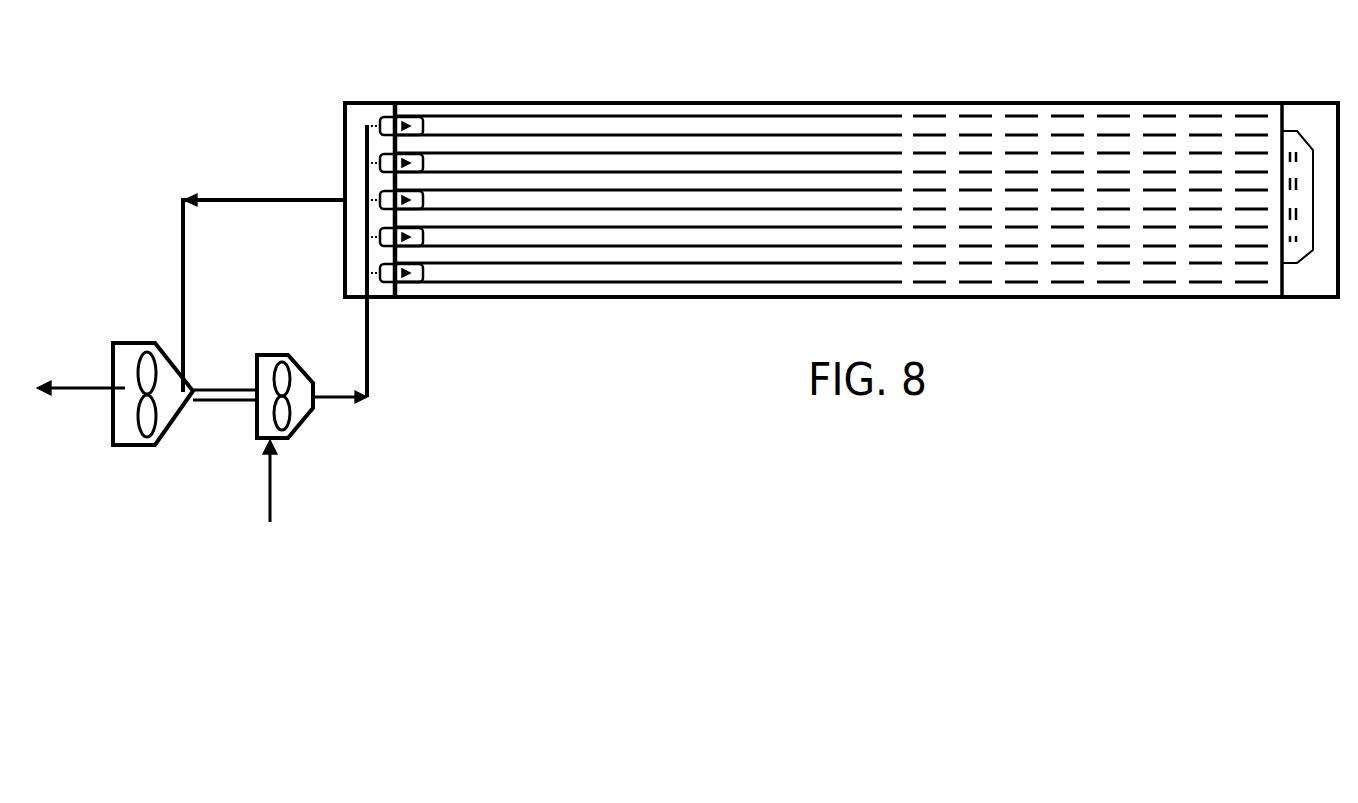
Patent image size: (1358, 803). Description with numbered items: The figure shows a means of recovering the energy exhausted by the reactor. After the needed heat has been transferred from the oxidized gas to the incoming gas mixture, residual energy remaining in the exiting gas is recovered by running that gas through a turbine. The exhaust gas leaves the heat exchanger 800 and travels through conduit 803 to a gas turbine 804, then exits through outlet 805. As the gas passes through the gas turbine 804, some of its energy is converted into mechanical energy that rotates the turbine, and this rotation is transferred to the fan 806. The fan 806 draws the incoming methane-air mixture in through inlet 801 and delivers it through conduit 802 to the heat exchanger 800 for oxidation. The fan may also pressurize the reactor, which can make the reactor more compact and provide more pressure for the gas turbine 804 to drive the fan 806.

The heat exchanger 800 is at (790, 88).
The inlet 801 is at (273, 493).
The conduit 802 is at (368, 350).
The conduit 803 is at (297, 195).
The gas turbine 804 is at (138, 342).
The outlet 805 is at (100, 393).
The fan 806 is at (277, 355).